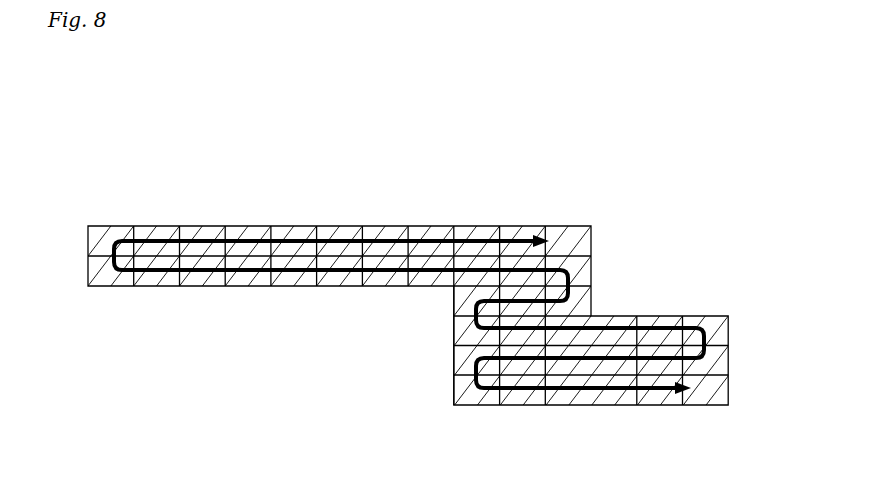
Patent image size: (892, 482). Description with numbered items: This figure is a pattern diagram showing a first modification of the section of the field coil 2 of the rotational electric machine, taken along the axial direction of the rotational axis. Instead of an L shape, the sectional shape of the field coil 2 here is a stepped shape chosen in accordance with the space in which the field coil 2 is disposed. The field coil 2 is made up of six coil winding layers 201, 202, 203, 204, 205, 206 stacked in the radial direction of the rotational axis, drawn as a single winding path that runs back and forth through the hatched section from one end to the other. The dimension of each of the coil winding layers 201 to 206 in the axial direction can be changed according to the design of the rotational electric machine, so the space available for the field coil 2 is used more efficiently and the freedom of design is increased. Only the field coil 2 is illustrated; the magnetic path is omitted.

The field coil 2 is at (337, 216).
The coil winding layer 201 is at (593, 242).
The coil winding layer 202 is at (593, 272).
The coil winding layer 203 is at (593, 300).
The coil winding layer 204 is at (730, 328).
The coil winding layer 205 is at (730, 357).
The coil winding layer 206 is at (730, 387).